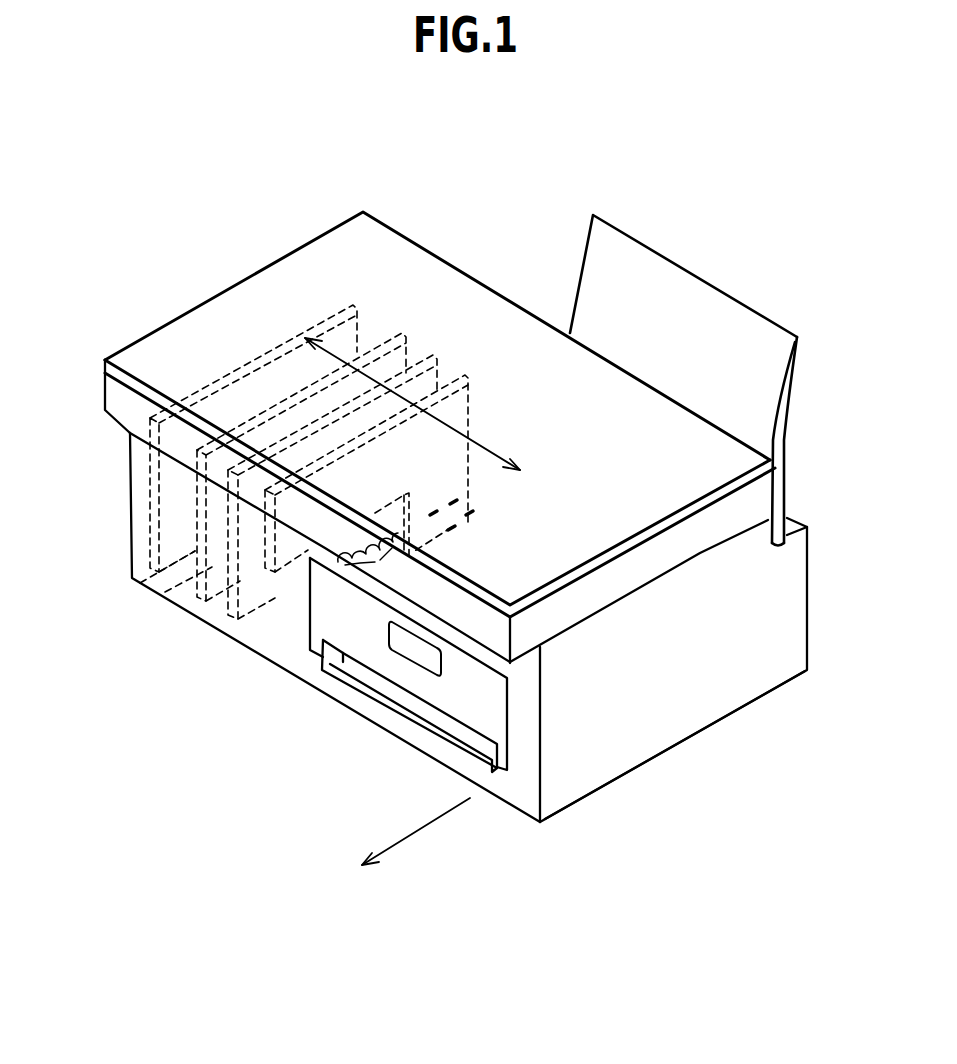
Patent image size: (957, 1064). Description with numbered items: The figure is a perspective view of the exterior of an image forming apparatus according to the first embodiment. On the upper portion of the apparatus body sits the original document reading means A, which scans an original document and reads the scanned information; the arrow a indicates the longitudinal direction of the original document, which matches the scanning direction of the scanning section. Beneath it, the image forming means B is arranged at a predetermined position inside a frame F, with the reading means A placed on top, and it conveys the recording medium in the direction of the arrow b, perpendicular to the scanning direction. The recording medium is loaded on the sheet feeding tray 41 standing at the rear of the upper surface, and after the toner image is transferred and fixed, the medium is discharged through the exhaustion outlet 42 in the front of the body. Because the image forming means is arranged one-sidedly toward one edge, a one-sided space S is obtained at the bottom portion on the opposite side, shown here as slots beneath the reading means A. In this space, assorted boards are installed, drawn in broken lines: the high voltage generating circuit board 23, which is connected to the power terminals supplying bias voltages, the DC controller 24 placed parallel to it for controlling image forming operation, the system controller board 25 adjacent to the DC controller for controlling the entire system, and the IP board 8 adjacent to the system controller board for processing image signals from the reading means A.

The original document reading means A is at (223, 327).
The image forming means B is at (525, 785).
The frame F is at (667, 750).
The space S is at (312, 567).
The IP board 8 is at (150, 523).
The high voltage generating circuit board 23 is at (272, 600).
The DC controller 24 is at (213, 607).
The system controller board 25 is at (160, 578).
The sheet feeding tray 41 is at (708, 282).
The exhaustion outlet 42 is at (395, 703).
The arrow a is at (431, 420).
The arrow b is at (400, 854).